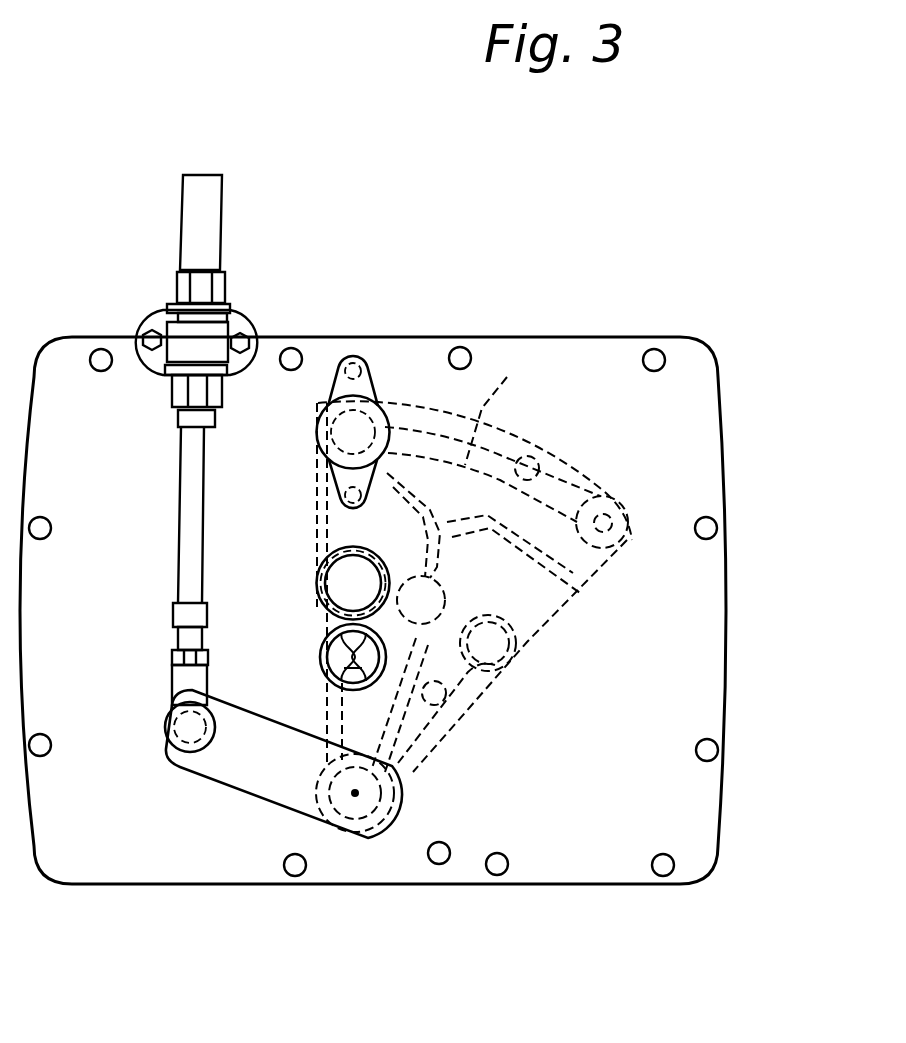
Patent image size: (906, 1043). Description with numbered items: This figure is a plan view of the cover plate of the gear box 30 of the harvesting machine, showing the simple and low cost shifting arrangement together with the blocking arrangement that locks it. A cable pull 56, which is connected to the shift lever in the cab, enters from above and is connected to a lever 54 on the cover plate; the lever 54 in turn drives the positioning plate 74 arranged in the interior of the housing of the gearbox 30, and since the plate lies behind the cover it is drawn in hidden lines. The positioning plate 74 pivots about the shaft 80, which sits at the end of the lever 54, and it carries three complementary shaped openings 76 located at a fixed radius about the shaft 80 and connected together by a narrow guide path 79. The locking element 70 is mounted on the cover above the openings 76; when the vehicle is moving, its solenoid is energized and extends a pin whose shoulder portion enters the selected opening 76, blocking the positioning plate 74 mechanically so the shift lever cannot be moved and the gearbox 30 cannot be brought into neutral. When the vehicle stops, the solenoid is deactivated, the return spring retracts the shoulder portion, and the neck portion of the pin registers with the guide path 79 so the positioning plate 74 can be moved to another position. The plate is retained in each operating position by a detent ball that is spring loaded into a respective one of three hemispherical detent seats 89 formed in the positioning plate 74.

The gear box 30 is at (145, 908).
The lever 54 is at (257, 782).
The cable pull 56 is at (180, 527).
The locking element 70 is at (362, 398).
The positioning plate 74 is at (627, 542).
The openings 76 is at (318, 398).
The guide path 79 is at (550, 450).
The shaft 80 is at (358, 793).
The detent seats 89 is at (523, 667).